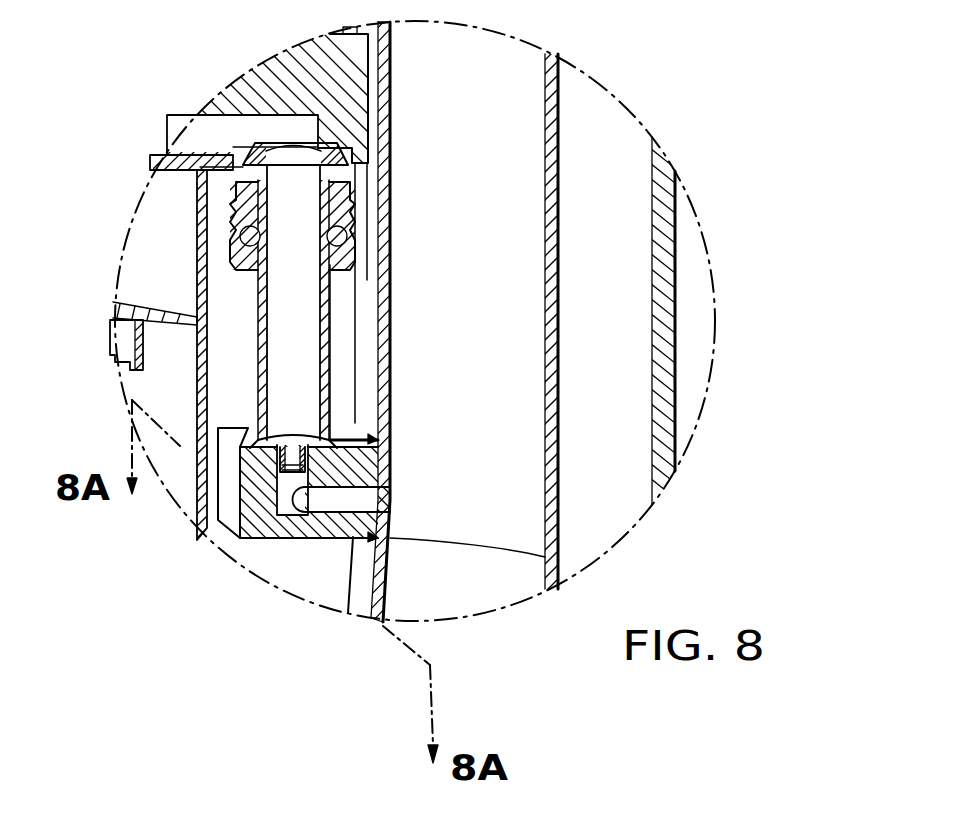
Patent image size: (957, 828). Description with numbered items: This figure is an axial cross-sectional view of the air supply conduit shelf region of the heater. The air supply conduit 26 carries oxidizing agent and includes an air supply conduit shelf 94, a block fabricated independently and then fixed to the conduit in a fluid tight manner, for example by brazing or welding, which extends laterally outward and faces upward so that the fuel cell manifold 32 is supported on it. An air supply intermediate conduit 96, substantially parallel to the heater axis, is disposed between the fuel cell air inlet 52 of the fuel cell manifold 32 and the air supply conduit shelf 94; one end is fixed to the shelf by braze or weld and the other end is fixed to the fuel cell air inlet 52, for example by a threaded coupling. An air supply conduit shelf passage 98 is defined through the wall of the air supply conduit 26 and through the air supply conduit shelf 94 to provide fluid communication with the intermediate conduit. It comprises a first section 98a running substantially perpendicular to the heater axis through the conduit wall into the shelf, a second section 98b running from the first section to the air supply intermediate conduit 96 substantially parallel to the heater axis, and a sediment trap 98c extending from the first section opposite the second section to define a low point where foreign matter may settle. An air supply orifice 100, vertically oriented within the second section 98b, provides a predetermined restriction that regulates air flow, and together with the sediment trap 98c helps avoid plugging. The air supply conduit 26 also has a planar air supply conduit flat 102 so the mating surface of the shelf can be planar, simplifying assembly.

The air supply conduit 26 is at (557, 125).
The fuel cell manifold 32 is at (252, 62).
The fuel cell air inlet 52 is at (297, 165).
The air supply conduit shelf 94 is at (347, 423).
The air supply intermediate conduit 96 is at (263, 303).
The air supply conduit shelf passage 98 is at (247, 503).
The air supply conduit shelf passage first section 98a is at (329, 497).
The air supply conduit shelf passage second section 98b is at (283, 447).
The air supply conduit shelf passage sediment trap 98c is at (293, 515).
The air supply orifice 100 is at (288, 478).
The air supply conduit flat 102 is at (368, 232).